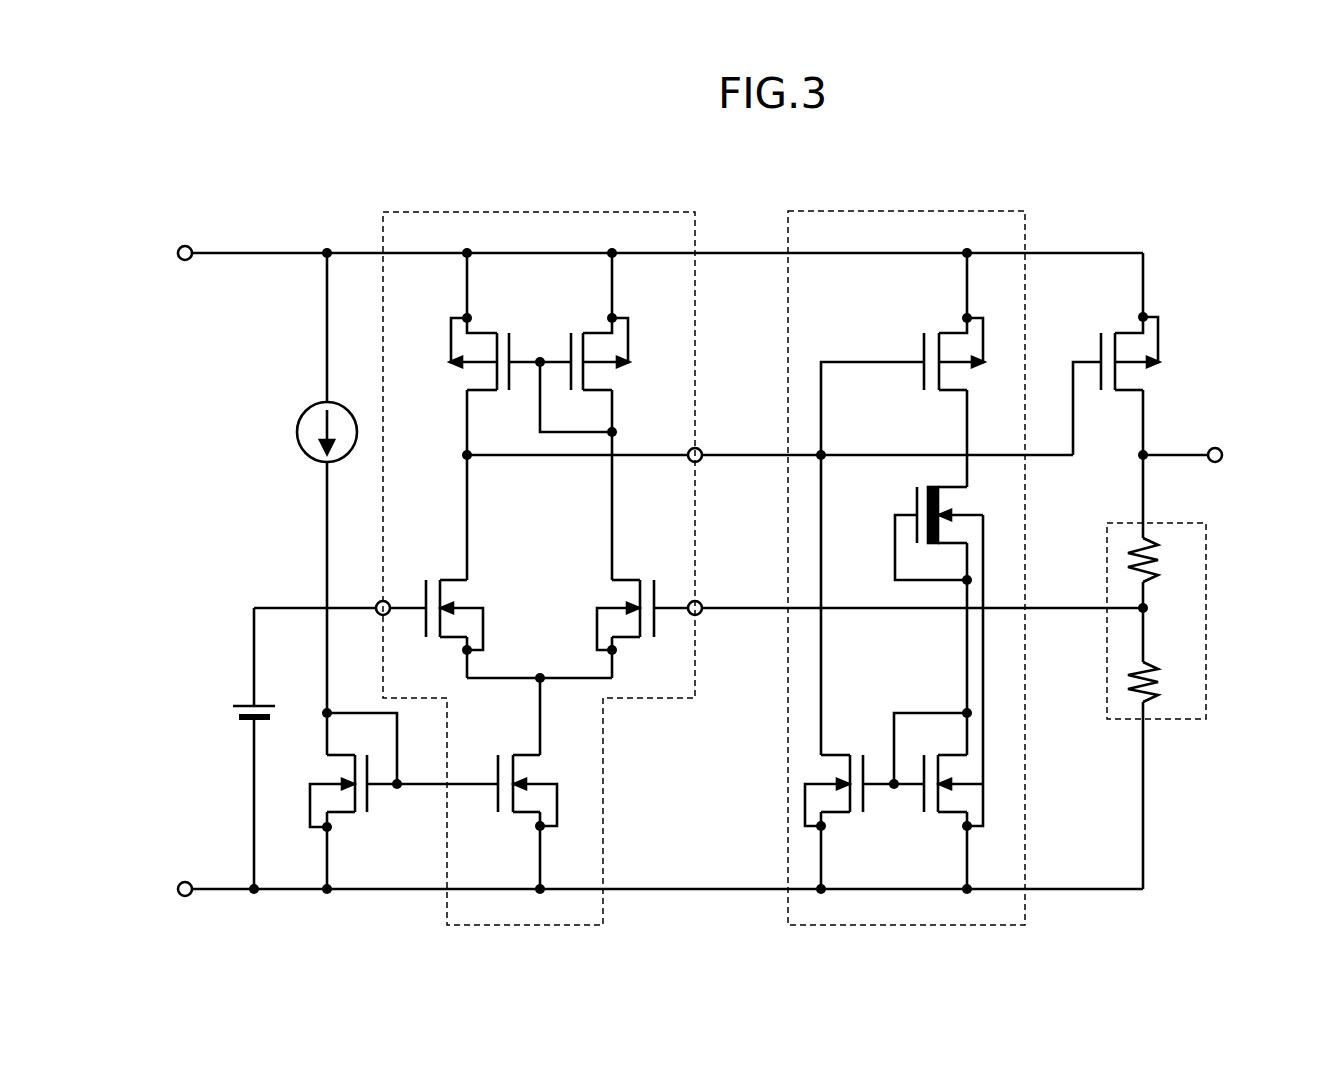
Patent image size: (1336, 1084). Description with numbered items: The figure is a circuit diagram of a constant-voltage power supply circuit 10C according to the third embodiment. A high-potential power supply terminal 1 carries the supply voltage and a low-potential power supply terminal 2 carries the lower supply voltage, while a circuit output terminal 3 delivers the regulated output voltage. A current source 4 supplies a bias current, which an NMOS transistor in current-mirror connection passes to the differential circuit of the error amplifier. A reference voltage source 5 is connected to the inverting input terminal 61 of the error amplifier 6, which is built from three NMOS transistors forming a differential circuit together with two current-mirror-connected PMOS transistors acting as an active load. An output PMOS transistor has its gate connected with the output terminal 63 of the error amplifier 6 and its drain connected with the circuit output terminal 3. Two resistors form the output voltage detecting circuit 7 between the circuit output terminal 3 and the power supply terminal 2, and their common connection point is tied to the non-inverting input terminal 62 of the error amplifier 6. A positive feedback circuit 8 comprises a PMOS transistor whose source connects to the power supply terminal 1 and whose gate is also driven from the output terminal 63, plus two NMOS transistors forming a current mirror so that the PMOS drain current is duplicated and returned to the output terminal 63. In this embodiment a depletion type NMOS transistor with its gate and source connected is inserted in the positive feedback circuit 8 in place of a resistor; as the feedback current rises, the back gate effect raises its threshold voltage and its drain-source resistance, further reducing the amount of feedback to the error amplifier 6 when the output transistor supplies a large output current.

The high-potential power supply terminal 1 is at (185, 246).
The low-potential power supply terminal 2 is at (185, 882).
The circuit output terminal 3 is at (1215, 447).
The current source 4 is at (303, 420).
The reference voltage source 5 is at (238, 705).
The error amplifier 6 is at (592, 212).
The output voltage detecting circuit 7 is at (1207, 628).
The positive feedback circuit 8 is at (927, 211).
The inverting input terminal 61 is at (379, 602).
The non-inverting input terminal 62 is at (702, 602).
The output terminal of the error amplifier 63 is at (702, 448).
The constant-voltage power supply circuit 10C is at (1203, 246).